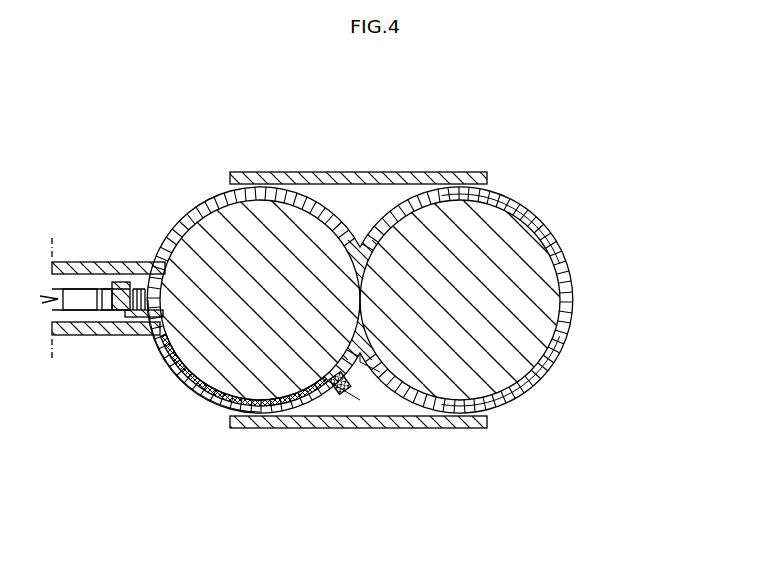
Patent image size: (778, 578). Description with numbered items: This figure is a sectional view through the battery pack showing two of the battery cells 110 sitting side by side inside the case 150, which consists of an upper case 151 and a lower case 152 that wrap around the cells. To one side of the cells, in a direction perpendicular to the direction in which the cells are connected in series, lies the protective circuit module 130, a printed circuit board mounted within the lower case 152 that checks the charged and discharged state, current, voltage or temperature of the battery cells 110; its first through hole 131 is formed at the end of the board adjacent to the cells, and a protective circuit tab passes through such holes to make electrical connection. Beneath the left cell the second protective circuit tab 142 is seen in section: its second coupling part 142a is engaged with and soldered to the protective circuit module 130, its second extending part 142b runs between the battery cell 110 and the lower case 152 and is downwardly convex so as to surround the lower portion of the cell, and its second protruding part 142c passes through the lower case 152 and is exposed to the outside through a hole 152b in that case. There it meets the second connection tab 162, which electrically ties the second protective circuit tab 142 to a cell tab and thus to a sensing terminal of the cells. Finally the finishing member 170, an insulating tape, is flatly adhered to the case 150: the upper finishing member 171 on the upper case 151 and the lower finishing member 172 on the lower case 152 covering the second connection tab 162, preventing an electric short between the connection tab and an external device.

The battery cells 110 is at (213, 225).
The protective circuit module 130 is at (98, 270).
The first through hole 131 is at (143, 262).
The second protective circuit tab 142 is at (237, 423).
The second coupling part 142a is at (127, 340).
The second extending part 142b is at (217, 410).
The second protruding part 142c is at (317, 434).
The case 150 is at (438, 300).
The upper case 151 is at (573, 257).
The lower case 152 is at (546, 364).
The hole 152b is at (350, 392).
The second connection tab 162 is at (355, 382).
The finishing member 170 is at (378, 242).
The upper finishing member 171 is at (431, 172).
The lower finishing member 172 is at (465, 416).